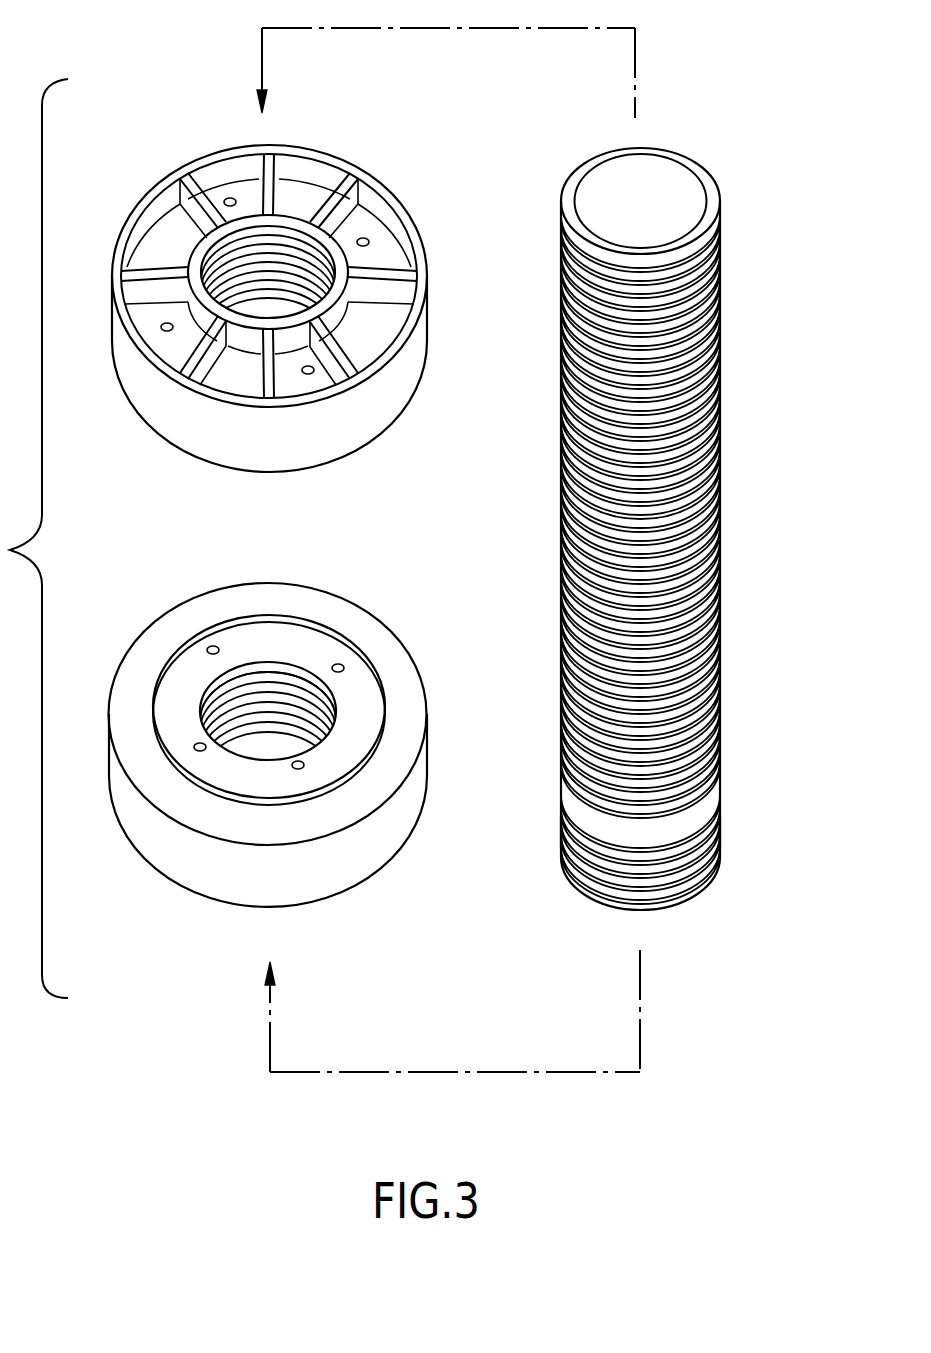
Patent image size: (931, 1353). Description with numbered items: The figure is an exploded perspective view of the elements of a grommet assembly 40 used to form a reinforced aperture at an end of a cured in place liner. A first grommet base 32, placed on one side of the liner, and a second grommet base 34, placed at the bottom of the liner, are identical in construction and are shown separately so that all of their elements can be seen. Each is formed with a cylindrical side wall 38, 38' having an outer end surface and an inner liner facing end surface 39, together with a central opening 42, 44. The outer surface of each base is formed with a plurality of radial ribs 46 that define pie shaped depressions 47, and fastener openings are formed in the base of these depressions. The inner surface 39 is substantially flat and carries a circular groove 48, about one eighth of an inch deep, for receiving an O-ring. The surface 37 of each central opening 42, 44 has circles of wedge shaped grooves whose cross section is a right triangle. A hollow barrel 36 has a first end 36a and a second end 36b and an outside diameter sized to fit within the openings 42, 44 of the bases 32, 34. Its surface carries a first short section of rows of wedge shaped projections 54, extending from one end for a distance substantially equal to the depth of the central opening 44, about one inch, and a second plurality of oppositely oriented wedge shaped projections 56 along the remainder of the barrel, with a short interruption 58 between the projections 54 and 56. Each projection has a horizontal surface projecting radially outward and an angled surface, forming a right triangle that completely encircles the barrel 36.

The first grommet base 32 is at (342, 135).
The second grommet base 34 is at (263, 918).
The hollow barrel 36 is at (758, 500).
The first end 36a is at (690, 897).
The second end 36b is at (708, 203).
The surface of central opening 37 is at (205, 712).
The cylindrical side wall 38 is at (290, 374).
The cylindrical side wall 38' is at (268, 821).
The inner liner facing end surface 39 is at (152, 640).
The grommet assembly 40 is at (372, 852).
The central opening 42 is at (262, 300).
The central opening 44 is at (258, 742).
The radial ribs 46 is at (388, 270).
The pie shaped depressions 47 is at (165, 240).
The circular groove 48 is at (385, 695).
The wedge shaped projections 54 is at (722, 850).
The wedge shaped projections 56 is at (722, 718).
The short interruption 58 is at (710, 802).